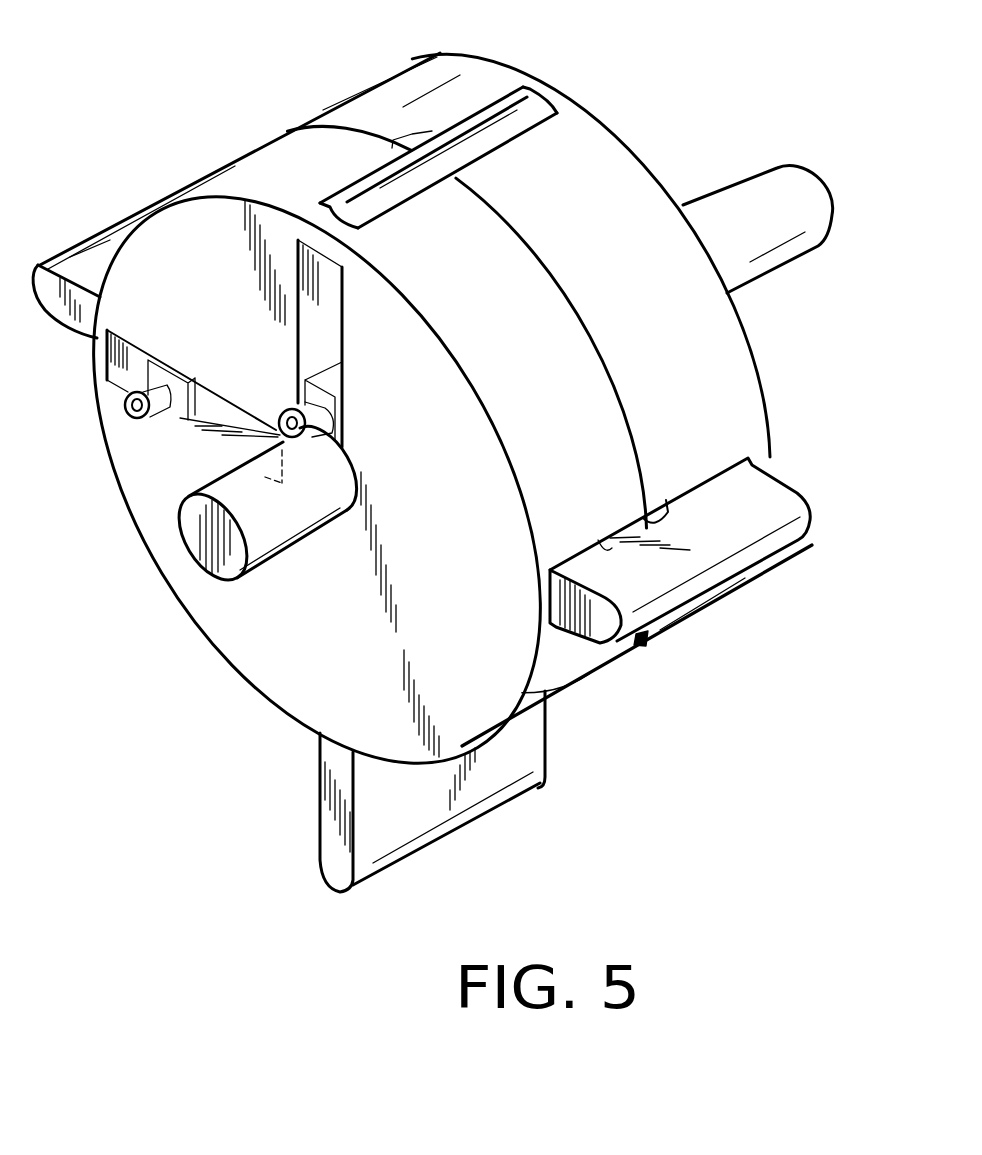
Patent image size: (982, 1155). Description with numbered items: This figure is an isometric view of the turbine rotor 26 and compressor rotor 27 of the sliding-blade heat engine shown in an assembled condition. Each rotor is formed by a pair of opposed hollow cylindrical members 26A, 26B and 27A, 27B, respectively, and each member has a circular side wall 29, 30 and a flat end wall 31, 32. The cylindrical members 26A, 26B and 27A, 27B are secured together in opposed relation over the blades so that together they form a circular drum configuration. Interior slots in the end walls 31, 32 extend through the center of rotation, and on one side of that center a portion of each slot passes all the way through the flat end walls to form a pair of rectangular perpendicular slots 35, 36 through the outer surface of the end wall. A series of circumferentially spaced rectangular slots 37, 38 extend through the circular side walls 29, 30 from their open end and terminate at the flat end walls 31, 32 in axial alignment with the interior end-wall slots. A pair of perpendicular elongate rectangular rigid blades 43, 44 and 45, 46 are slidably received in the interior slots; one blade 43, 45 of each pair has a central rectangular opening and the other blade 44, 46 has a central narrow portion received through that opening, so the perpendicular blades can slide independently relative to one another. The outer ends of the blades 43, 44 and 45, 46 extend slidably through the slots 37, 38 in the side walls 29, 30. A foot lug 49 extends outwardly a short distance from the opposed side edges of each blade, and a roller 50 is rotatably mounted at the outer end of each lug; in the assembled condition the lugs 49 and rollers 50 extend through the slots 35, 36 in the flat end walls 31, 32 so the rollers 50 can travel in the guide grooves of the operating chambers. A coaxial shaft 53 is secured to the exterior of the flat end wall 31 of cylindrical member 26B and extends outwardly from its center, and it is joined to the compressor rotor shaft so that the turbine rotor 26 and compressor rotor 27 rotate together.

The turbine rotor 26 is at (618, 180).
The compressor rotor 27 is at (694, 150).
The hollow cylindrical member 26A is at (236, 195).
The hollow cylindrical member 27A is at (272, 177).
The hollow cylindrical member 26B is at (438, 116).
The hollow cylindrical member 27B is at (485, 93).
The circular side wall 29 is at (637, 645).
The circular side wall 30 is at (668, 616).
The end wall 31 is at (417, 447).
The end wall 32 is at (683, 205).
The rectangular perpendicular slot 35 is at (224, 361).
The rectangular perpendicular slot 36 is at (315, 328).
The rectangular slot 37 is at (493, 323).
The rectangular slot 38 is at (410, 152).
The rigid blade 43 is at (432, 797).
The rigid blade 44 is at (410, 825).
The rigid blade 45 is at (723, 541).
The rigid blade 46 is at (767, 500).
The foot lug 49 is at (338, 378).
The roller 50 is at (315, 409).
The shaft 53 is at (270, 523).